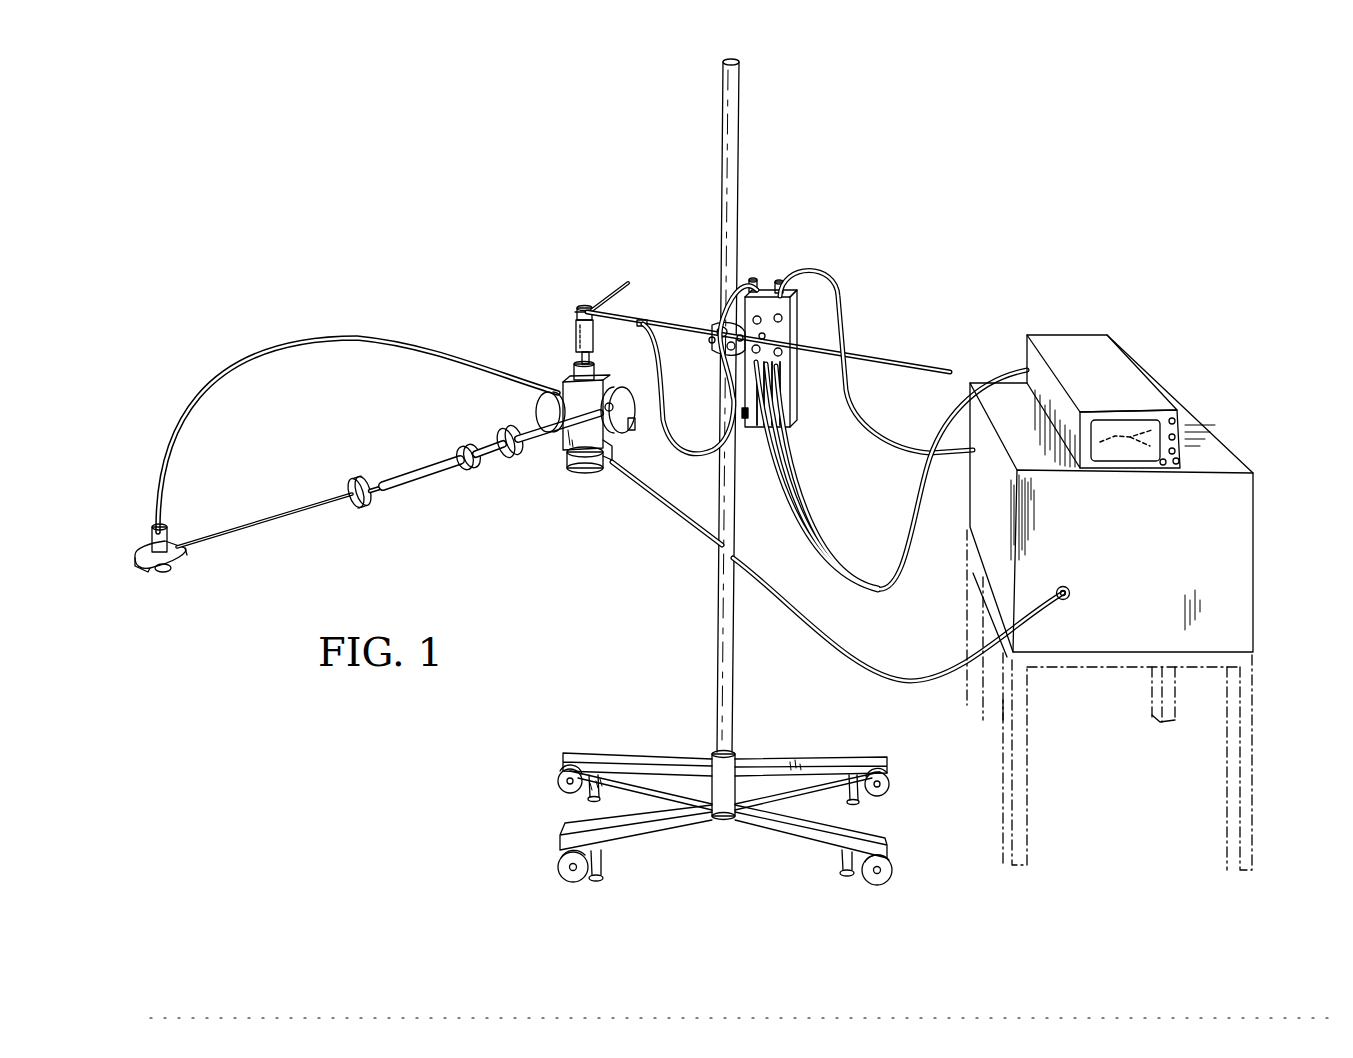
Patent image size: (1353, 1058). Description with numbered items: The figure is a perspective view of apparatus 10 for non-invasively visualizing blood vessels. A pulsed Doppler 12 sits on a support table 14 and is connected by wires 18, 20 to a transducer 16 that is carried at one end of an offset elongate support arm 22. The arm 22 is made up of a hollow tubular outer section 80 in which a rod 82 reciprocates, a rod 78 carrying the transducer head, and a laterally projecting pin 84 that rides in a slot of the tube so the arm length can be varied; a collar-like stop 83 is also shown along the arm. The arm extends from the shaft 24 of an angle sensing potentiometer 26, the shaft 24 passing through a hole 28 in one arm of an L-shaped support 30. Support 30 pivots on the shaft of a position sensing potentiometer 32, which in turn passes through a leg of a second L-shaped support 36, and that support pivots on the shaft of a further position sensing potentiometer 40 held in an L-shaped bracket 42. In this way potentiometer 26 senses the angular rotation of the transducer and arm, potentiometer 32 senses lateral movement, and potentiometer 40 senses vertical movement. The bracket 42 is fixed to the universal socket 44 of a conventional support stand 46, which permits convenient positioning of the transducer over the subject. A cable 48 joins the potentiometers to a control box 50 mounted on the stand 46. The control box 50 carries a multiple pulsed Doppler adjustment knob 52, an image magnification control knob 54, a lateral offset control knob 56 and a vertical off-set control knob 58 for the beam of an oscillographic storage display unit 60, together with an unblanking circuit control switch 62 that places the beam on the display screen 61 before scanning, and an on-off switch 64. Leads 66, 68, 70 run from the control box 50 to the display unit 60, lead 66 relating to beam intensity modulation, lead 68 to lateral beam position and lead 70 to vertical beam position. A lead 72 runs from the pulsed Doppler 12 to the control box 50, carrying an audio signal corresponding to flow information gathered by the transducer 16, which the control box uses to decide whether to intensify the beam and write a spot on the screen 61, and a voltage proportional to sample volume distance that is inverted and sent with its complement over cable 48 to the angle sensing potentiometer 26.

The apparatus 10 is at (500, 355).
The pulsed Doppler 12 is at (1140, 619).
The support table 14 is at (1253, 698).
The transducer 16 is at (181, 553).
The wire 18 is at (158, 493).
The wire 20 is at (166, 518).
The offset elongate support arm 22 is at (388, 489).
The shaft 24 is at (610, 450).
The angle sensing potentiometer 26 is at (625, 427).
The hole 28 is at (610, 403).
The L-shaped support 30 is at (600, 457).
The position sensing potentiometer 32 is at (577, 463).
The L-shaped support 36 is at (563, 443).
The position sensing potentiometer 40 is at (541, 398).
The L-shaped bracket 42 is at (572, 357).
The universal socket 44 is at (577, 314).
The support stand 46 is at (733, 673).
The cable 48 is at (691, 455).
The control box 50 is at (802, 326).
The multiple pulsed Doppler adjustment knob 52 is at (760, 292).
The image magnification control knob 54 is at (782, 320).
The lateral offset control knob 56 is at (758, 352).
The vertical off-set control knob 58 is at (780, 354).
The oscillographic storage display unit 60 is at (1125, 401).
The display screen 61 is at (1145, 437).
The unblanking circuit control switch 62 is at (770, 340).
The on-off switch 64 is at (745, 418).
The lead 66 is at (886, 476).
The lead 68 is at (786, 434).
The lead 70 is at (791, 458).
The lead 72 is at (840, 305).
The rod 78 is at (288, 510).
The hollow tubular outer section 80 is at (447, 477).
The rod 82 is at (374, 495).
The stop disk 83 is at (364, 478).
The laterally projecting pin 84 is at (500, 447).